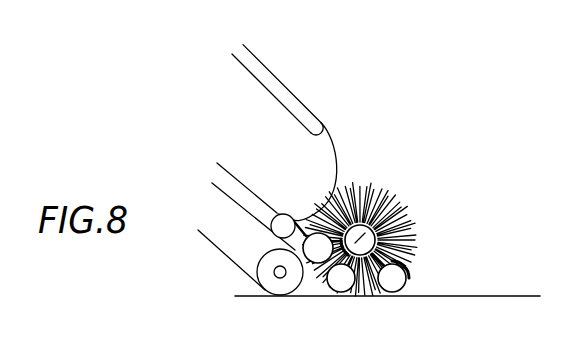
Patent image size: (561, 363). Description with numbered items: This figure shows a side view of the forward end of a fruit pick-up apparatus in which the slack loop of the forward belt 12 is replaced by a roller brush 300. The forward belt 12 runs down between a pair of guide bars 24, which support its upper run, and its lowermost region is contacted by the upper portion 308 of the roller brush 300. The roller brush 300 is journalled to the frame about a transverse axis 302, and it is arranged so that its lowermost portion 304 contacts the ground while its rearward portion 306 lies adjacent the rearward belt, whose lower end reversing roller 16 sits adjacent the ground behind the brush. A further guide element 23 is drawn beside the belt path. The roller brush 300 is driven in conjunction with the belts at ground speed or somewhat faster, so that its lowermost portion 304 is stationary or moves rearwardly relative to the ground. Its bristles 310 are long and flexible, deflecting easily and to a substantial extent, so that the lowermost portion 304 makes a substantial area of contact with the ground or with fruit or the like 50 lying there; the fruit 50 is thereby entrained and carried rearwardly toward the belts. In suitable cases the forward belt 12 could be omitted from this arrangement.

The guide bars 24 is at (272, 85).
The forward belt 12 is at (337, 142).
The guide plate 23 is at (235, 200).
The fruit or the like 50 is at (282, 225).
The lower end reversing roller 16 is at (273, 282).
The upper portion 308 is at (344, 180).
The transverse axis 302 is at (378, 206).
The roller brush 300 is at (397, 196).
The rearward portion 306 is at (309, 279).
The lowermost portion 304 is at (359, 301).
The bristles 310 is at (405, 244).